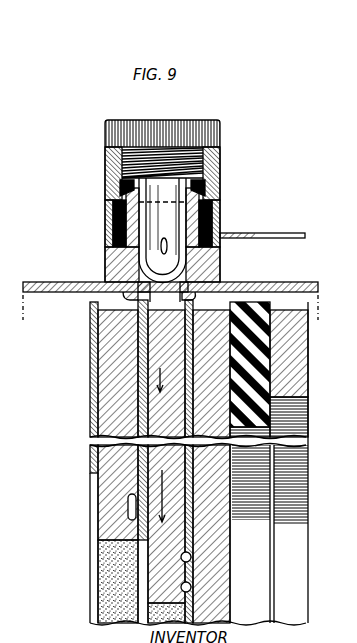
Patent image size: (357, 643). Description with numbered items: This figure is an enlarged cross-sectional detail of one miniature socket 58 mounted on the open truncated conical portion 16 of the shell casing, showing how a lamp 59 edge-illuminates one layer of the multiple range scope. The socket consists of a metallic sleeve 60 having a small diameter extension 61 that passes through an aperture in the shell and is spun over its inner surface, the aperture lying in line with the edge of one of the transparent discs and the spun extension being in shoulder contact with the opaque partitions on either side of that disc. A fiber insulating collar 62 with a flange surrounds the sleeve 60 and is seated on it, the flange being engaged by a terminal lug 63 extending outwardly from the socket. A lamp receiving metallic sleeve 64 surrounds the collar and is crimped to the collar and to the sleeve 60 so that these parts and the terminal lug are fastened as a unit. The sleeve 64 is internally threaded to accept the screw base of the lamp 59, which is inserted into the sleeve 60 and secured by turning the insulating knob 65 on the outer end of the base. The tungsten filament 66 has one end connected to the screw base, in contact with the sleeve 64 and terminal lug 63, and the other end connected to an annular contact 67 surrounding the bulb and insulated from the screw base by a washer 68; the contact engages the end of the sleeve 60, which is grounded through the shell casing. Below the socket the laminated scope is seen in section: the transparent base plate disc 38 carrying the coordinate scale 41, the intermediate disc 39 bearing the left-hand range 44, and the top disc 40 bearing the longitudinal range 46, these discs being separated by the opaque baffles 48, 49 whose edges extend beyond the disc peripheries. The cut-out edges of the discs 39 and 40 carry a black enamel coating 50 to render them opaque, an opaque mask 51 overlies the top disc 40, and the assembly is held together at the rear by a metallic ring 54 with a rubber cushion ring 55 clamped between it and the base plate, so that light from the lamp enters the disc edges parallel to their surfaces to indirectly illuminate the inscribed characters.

The open truncated conical portion 16 is at (290, 284).
The base plate disc 38 is at (212, 551).
The intermediate disc 39 is at (160, 465).
The top disc 40 is at (106, 370).
The coordinate scale 41 is at (223, 617).
The left-hand range 44 is at (192, 572).
The longitudinal range 46 is at (123, 520).
The opaque baffle 48 is at (192, 522).
The opaque baffle 49 is at (140, 480).
The black enamel coating 50 is at (148, 612).
The opaque mask 51 is at (92, 332).
The metallic ring 54 is at (290, 356).
The rubber cushion ring 55 is at (268, 378).
The miniature socket 58 is at (92, 226).
The lamp 59 is at (222, 157).
The metallic sleeve 60 is at (221, 266).
The small diameter extension 61 is at (223, 290).
The fiber insulating collar 62 is at (222, 220).
The terminal lug 63 is at (278, 235).
The lamp receiving metallic sleeve 64 is at (105, 168).
The insulating knob 65 is at (190, 135).
The tungsten filament 66 is at (148, 243).
The annular contact 67 is at (222, 201).
The washer 68 is at (222, 183).